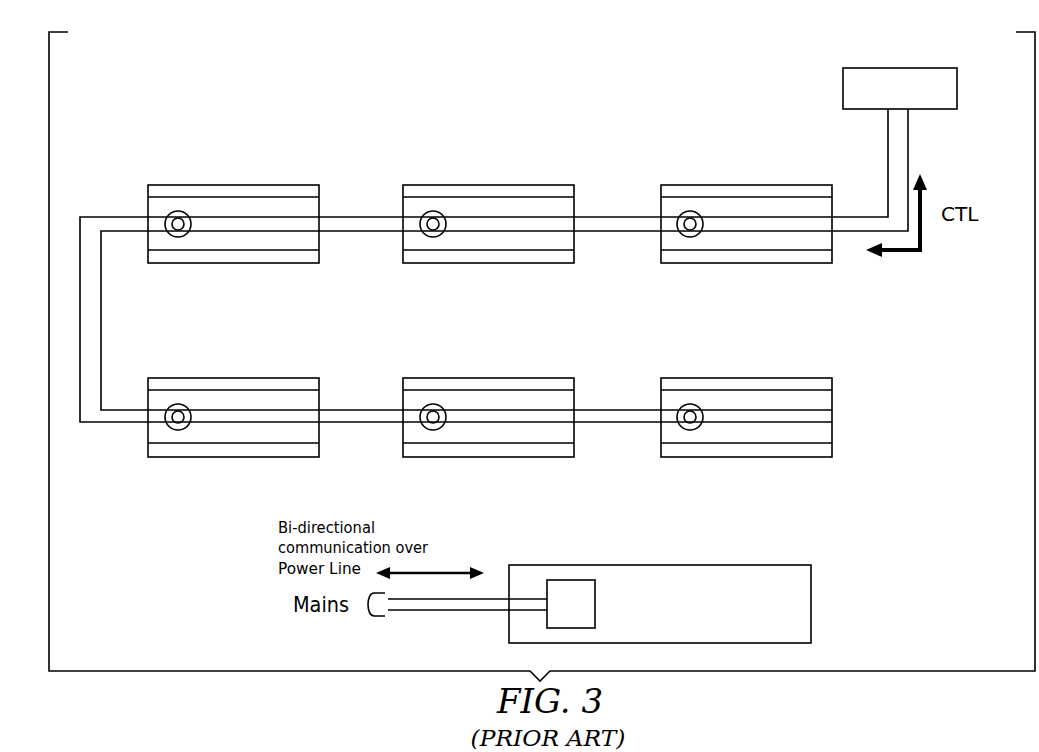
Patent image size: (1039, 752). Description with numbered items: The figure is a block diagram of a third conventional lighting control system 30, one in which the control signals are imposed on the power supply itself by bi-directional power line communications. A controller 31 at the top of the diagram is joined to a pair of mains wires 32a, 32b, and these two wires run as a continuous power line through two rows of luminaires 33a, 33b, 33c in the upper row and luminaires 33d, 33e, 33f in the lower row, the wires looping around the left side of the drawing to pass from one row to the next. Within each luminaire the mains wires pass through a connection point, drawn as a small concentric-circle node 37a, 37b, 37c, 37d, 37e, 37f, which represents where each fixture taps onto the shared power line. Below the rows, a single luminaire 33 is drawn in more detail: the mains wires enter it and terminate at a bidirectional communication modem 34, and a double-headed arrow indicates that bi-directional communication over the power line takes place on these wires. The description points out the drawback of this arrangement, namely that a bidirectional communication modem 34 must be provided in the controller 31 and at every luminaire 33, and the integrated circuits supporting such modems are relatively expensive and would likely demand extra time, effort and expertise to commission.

The system 30 is at (948, 388).
The controller 31 is at (900, 67).
The mains wire 32a is at (887, 170).
The mains wire 32b is at (909, 168).
The luminaire 33 is at (812, 600).
The luminaire 33a is at (748, 185).
The luminaire 33b is at (490, 185).
The luminaire 33c is at (235, 185).
The luminaire 33d is at (234, 457).
The luminaire 33e is at (490, 457).
The luminaire 33f is at (748, 457).
The bidirectional communication modem 34 is at (585, 580).
The connection node 37a is at (690, 238).
The connection node 37b is at (433, 238).
The connection node 37c is at (178, 238).
The connection node 37d is at (178, 431).
The connection node 37e is at (433, 431).
The connection node 37f is at (690, 431).